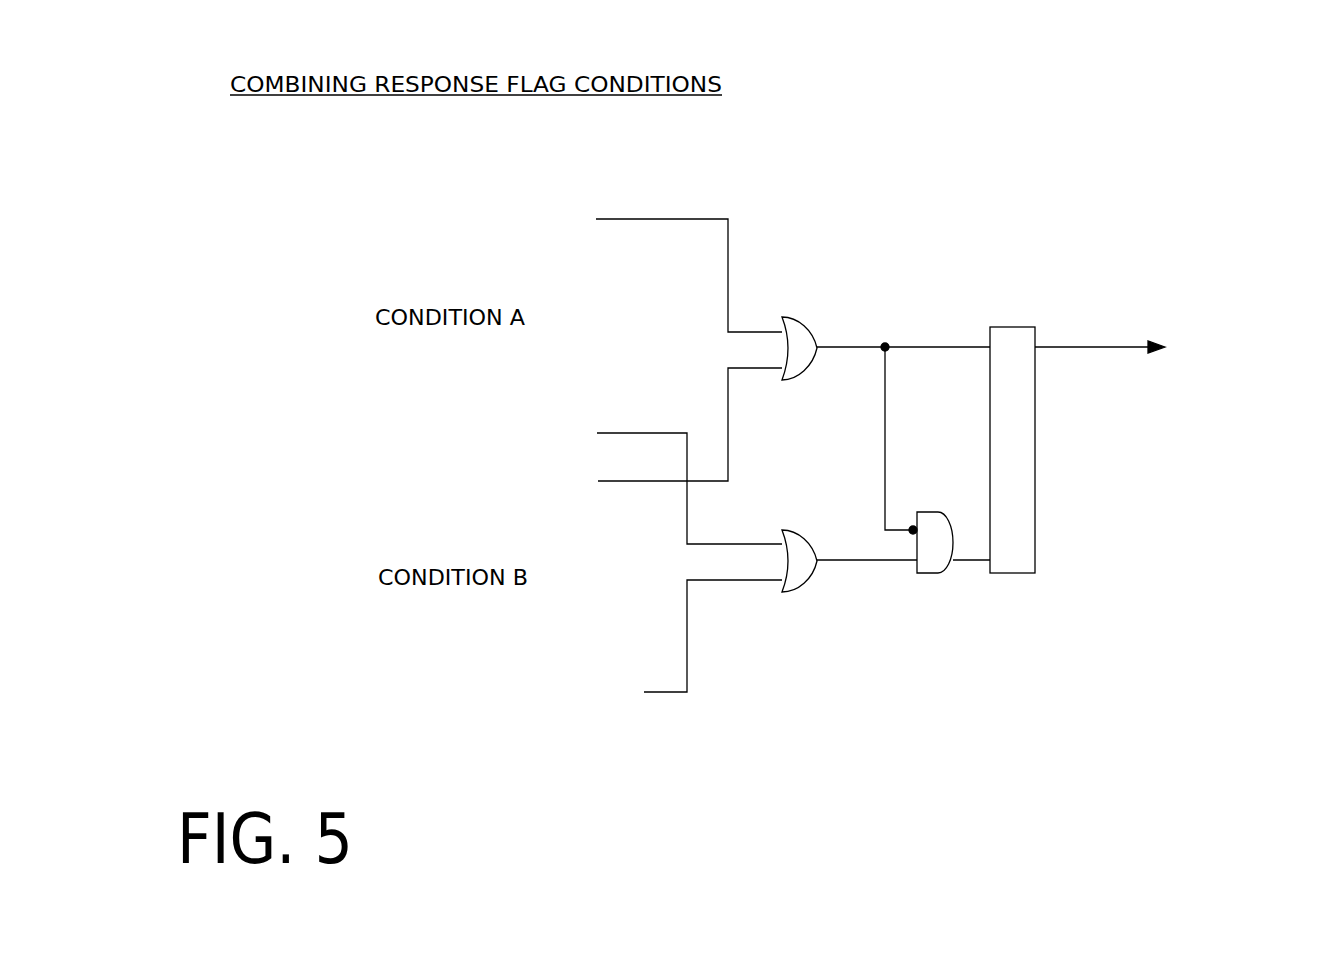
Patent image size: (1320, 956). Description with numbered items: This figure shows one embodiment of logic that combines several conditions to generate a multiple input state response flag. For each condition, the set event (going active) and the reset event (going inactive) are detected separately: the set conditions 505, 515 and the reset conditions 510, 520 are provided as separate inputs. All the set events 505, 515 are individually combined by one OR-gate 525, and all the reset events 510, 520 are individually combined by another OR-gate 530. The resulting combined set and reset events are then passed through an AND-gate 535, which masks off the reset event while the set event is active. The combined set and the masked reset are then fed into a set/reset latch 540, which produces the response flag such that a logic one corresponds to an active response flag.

The set condition 505 is at (590, 210).
The reset condition 510 is at (590, 416).
The set condition 515 is at (600, 523).
The reset condition 520 is at (605, 713).
The OR-gate 525 is at (800, 318).
The OR-gate 530 is at (800, 530).
The AND-gate 535 is at (922, 575).
The set/reset latch 540 is at (1035, 455).